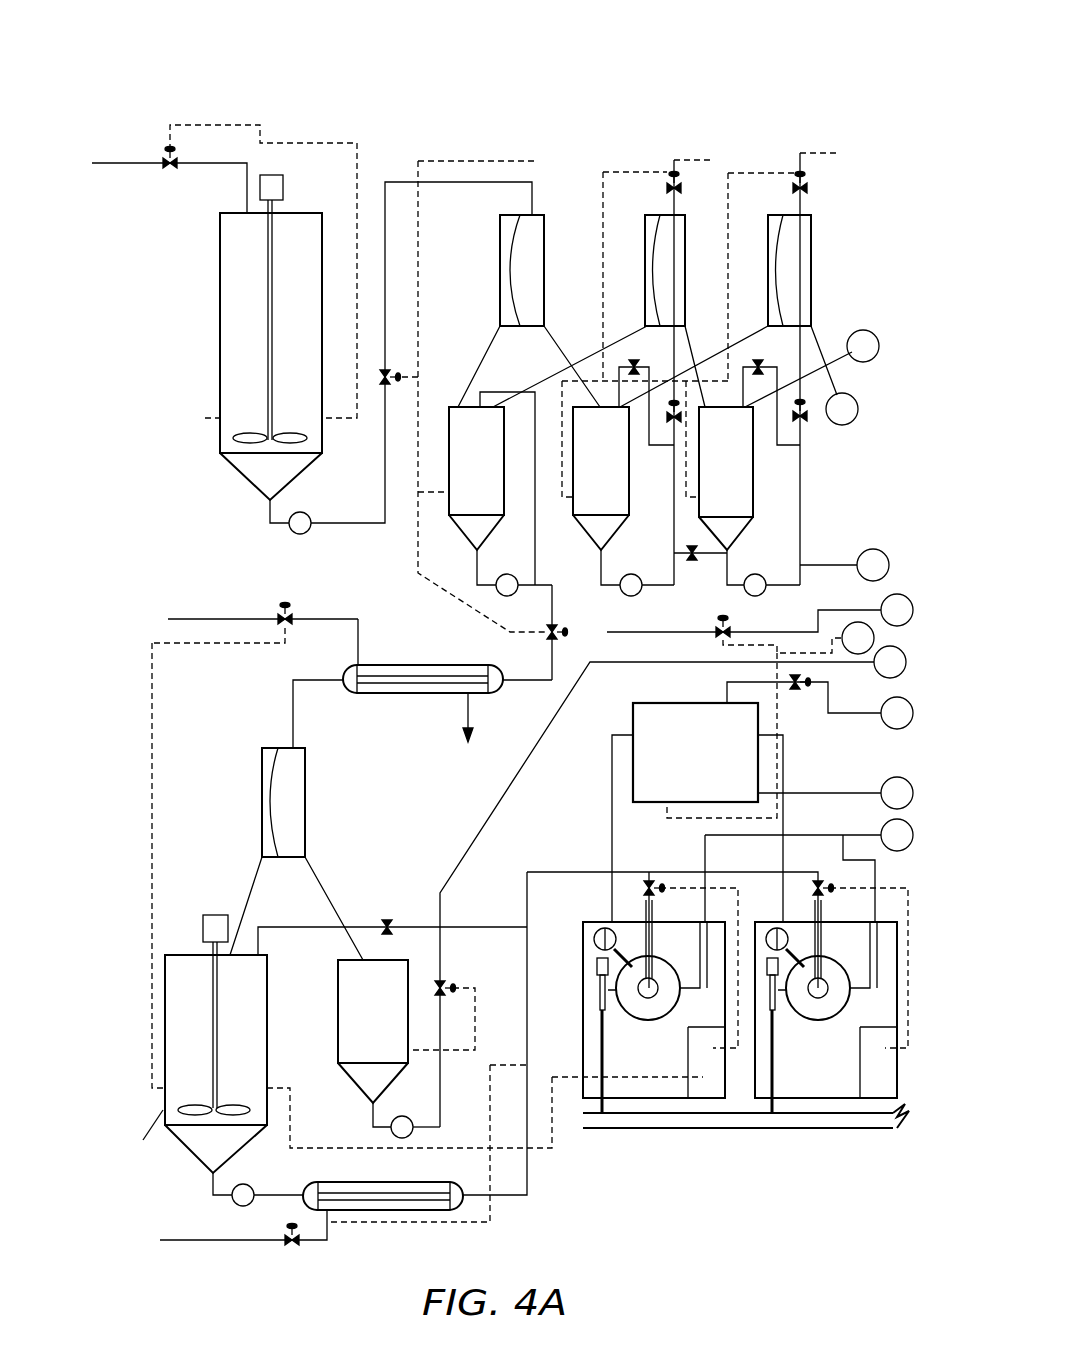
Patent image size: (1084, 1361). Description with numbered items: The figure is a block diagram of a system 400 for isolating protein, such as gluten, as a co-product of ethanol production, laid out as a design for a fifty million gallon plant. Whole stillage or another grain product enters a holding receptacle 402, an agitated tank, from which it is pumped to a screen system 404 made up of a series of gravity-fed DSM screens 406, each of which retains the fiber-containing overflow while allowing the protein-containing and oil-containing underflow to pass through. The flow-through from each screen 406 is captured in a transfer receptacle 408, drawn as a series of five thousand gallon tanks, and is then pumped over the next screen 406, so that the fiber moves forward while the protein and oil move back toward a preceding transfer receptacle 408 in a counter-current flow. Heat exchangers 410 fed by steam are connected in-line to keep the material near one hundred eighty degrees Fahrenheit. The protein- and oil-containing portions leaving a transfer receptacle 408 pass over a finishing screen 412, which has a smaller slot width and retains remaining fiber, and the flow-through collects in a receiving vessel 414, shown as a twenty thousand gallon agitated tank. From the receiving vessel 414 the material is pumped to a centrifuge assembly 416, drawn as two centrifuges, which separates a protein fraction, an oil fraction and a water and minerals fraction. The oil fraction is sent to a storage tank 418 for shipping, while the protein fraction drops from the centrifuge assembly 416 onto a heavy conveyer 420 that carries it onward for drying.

The system 400 is at (262, 70).
The holding receptacle 402 is at (236, 285).
The screen system 404 is at (835, 183).
The screen 406 is at (513, 263).
The transfer receptacle 408 is at (449, 472).
The heat exchanger 410 is at (420, 692).
The finishing screen 412 is at (265, 777).
The receiving vessel 414 is at (178, 1088).
The centrifuge assembly 416 is at (900, 884).
The storage tank 418 is at (645, 712).
The conveyer 420 is at (870, 1132).